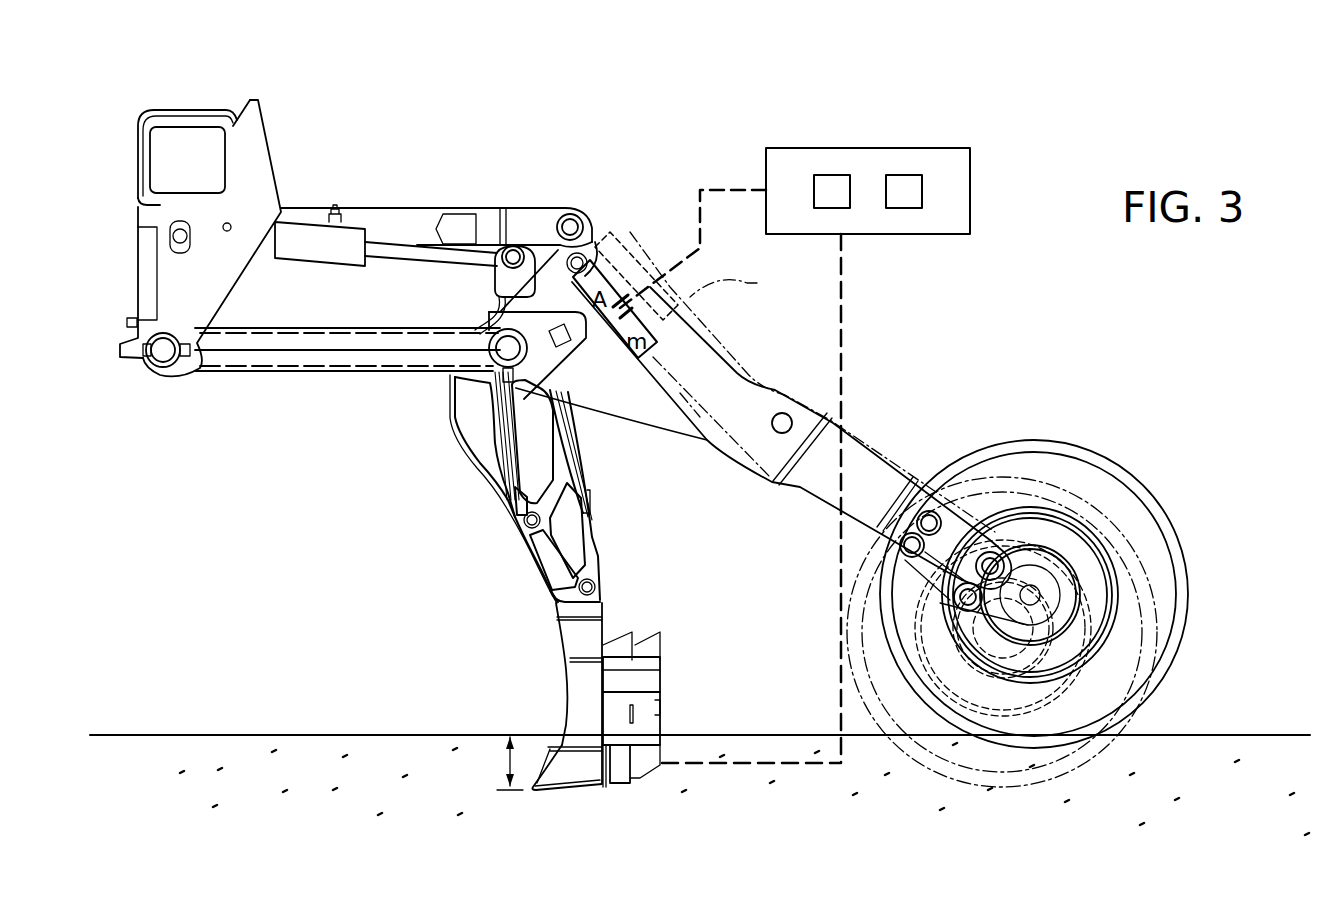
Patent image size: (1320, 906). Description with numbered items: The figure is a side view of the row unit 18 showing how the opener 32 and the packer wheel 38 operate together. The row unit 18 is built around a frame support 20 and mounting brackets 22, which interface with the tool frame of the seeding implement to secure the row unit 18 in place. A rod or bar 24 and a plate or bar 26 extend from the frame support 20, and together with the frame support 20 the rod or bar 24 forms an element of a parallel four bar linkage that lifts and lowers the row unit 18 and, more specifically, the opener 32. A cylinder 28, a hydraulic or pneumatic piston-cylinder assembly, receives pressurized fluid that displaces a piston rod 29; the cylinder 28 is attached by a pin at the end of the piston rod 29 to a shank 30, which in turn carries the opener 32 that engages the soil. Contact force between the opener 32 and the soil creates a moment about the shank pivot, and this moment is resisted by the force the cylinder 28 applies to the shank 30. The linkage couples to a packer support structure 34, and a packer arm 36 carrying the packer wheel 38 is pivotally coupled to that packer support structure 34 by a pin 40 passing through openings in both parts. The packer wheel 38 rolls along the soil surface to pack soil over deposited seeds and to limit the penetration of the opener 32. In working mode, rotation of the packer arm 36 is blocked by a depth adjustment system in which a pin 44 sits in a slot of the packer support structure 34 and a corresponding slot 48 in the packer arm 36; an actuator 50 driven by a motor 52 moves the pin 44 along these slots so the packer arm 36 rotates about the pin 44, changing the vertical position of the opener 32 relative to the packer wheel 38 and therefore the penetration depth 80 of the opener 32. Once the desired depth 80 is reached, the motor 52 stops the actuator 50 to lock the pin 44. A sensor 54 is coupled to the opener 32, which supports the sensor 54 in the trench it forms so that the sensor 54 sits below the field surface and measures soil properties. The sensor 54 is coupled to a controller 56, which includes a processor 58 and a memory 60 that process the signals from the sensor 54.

The row unit 18 is at (528, 184).
The frame support 20 is at (273, 157).
The mounting bracket 22 is at (188, 112).
The rod or bar 24 is at (335, 358).
The plate or bar 26 is at (393, 206).
The cylinder 28 is at (331, 254).
The piston rod 29 is at (413, 245).
The shank 30 is at (590, 497).
The opener 32 is at (548, 777).
The packer support structure 34 is at (643, 410).
The packer arm 36 is at (735, 377).
The packer wheel 38 is at (1075, 447).
The pin 40 is at (785, 412).
The pin 44 is at (564, 220).
The slot 48 is at (572, 286).
The actuator 50 is at (655, 262).
The motor 52 is at (742, 283).
The sensor 54 is at (618, 786).
The controller 56 is at (868, 234).
The processor 58 is at (832, 175).
The memory 60 is at (900, 175).
The depth 80 is at (500, 763).